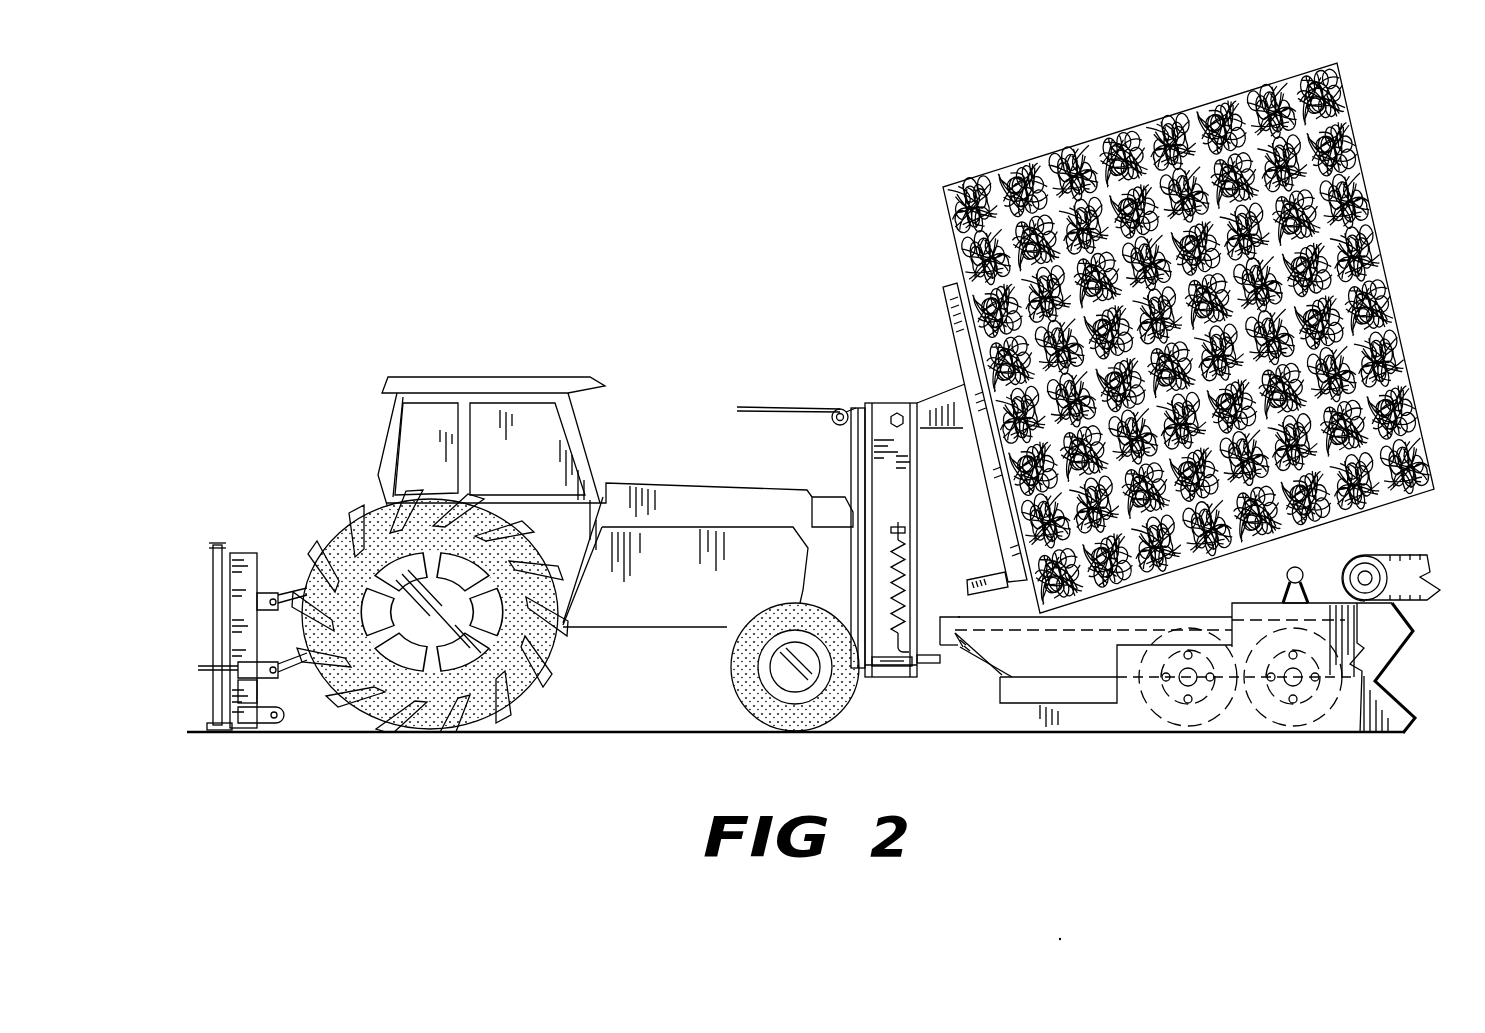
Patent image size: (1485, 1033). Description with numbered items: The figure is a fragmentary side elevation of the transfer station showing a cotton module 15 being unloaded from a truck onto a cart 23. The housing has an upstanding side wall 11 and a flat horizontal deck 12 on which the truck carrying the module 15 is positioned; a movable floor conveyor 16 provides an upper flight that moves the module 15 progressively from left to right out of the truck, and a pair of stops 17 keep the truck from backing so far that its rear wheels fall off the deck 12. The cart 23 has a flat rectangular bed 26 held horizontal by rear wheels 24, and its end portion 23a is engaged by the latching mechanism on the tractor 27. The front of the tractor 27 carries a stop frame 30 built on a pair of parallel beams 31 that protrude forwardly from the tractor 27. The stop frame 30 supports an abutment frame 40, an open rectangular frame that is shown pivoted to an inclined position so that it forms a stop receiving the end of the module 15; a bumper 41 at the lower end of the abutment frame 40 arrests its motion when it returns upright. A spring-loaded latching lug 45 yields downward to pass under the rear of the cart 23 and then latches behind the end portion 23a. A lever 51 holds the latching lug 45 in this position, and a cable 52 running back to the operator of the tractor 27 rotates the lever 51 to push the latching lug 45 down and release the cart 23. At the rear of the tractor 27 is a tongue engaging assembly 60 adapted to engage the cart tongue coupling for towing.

The side wall 11 is at (1388, 693).
The deck 12 is at (1314, 583).
The cotton module 15 is at (1053, 150).
The floor conveyor 16 is at (1405, 583).
The stops 17 is at (1288, 578).
The cart 23 is at (947, 607).
The end portion of the cart 23a is at (968, 642).
The rear wheels 24 is at (1230, 737).
The bed 26 is at (1128, 623).
The tractor 27 is at (637, 623).
The stop frame 30 is at (889, 389).
The beams 31 is at (862, 687).
The abutment frame 40 is at (948, 318).
The bumper 41 is at (985, 572).
The latching lug 45 is at (950, 673).
The lever 51 is at (878, 672).
The cable 52 is at (747, 408).
The tongue engaging assembly 60 is at (192, 574).